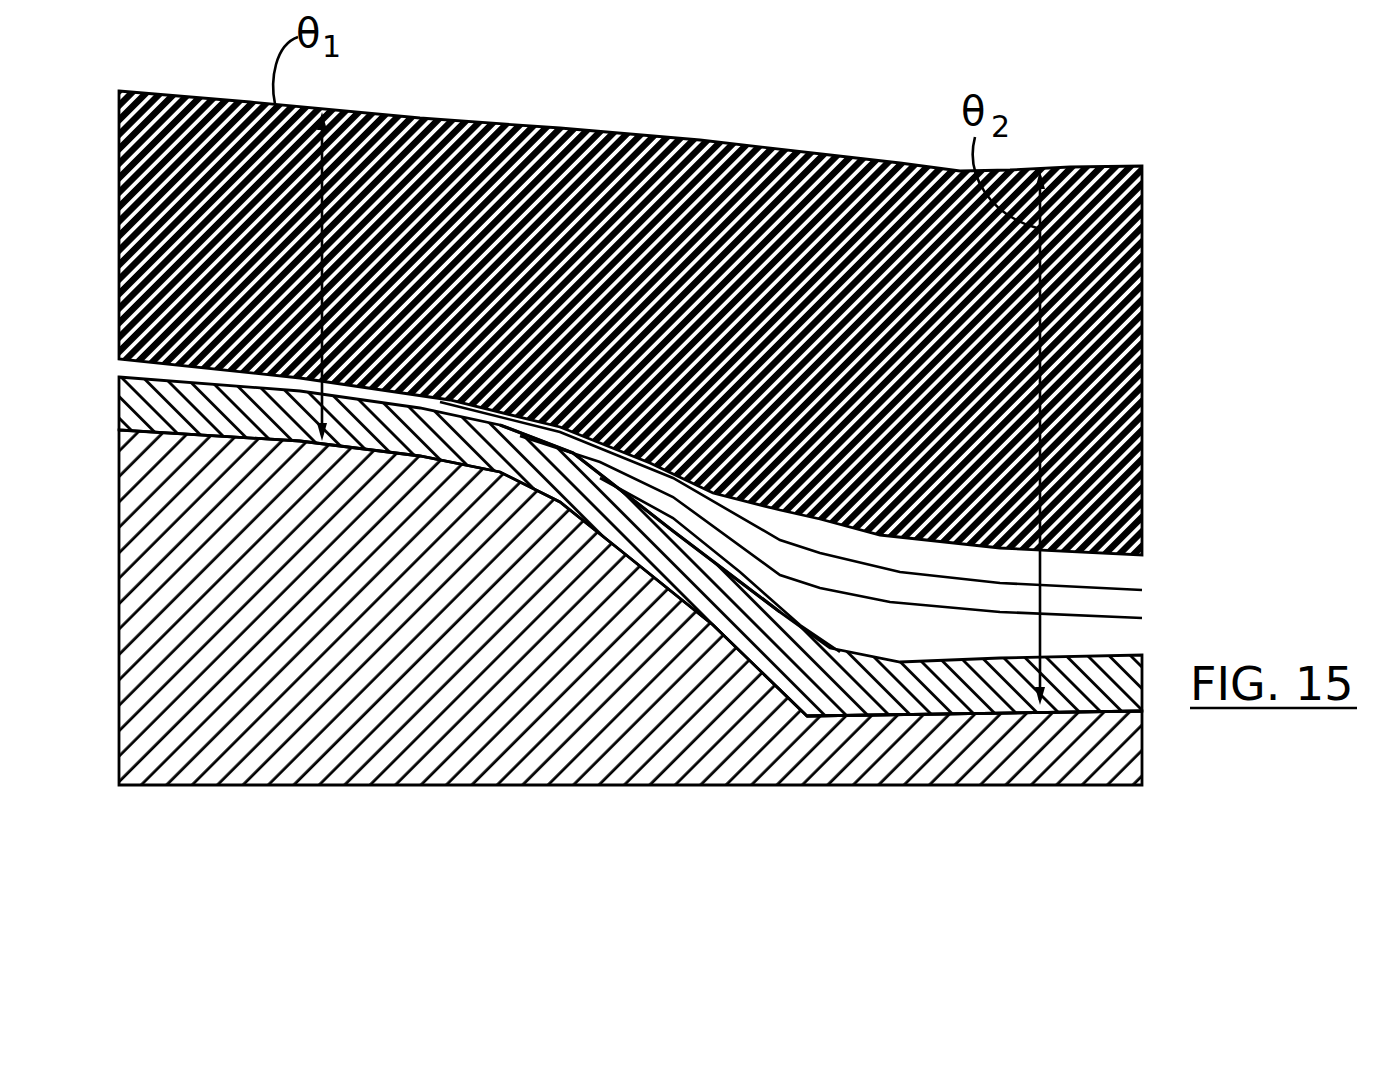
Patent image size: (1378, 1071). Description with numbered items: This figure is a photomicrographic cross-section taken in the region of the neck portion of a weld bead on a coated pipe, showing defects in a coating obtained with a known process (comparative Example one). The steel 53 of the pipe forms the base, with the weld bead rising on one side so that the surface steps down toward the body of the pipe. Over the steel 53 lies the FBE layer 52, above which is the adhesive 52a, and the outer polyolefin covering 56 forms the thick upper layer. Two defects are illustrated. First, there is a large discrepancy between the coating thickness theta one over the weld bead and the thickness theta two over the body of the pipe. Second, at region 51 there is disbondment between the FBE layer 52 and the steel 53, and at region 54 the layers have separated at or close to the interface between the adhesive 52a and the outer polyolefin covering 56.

The region of disbondment 51 is at (972, 693).
The FBE layer 52 is at (917, 693).
The adhesive 52a is at (585, 458).
The steel 53 is at (750, 715).
The region of layer separation 54 is at (866, 578).
The outer polyolefin covering 56 is at (502, 293).